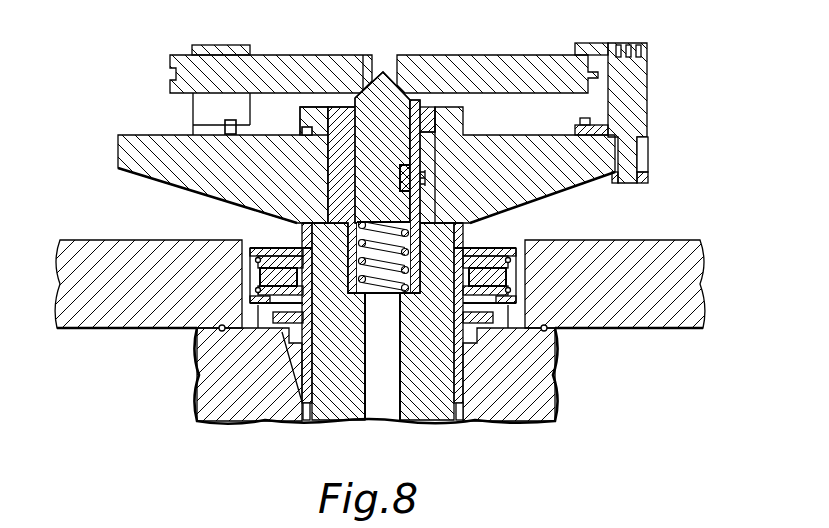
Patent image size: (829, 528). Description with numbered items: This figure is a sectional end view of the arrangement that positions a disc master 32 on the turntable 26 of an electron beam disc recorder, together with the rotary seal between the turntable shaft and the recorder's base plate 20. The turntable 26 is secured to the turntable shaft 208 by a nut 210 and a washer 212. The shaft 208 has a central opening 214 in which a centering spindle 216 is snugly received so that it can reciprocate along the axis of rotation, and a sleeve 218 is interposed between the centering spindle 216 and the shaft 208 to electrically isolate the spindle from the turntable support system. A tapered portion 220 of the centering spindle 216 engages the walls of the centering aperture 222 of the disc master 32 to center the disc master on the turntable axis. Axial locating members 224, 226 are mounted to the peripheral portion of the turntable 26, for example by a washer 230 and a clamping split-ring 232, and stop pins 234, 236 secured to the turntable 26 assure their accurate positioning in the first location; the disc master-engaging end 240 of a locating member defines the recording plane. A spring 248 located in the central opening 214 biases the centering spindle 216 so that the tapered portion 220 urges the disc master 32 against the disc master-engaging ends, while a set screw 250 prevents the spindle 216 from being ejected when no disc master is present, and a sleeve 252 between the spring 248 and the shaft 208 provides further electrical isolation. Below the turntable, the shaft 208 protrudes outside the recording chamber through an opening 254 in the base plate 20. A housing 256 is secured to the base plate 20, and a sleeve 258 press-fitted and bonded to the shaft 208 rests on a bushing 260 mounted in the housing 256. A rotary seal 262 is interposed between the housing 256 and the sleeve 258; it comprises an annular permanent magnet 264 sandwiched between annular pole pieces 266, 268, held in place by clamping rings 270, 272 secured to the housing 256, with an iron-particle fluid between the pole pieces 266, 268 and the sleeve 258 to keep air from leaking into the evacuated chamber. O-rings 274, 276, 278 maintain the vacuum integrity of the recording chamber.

The base plate 20 is at (650, 330).
The turntable 26 is at (557, 190).
The disc master 32 is at (473, 54).
The turntable shaft 208 is at (257, 211).
The nut 210 is at (303, 106).
The washer 212 is at (308, 136).
The central opening 214 is at (340, 174).
The centering spindle 216 is at (400, 208).
The sleeve 218 is at (351, 138).
The tapered portion 220 is at (380, 66).
The centering aperture 222 is at (393, 58).
The axial locating member 224 is at (648, 83).
The axial locating member 226 is at (245, 97).
The washer 230 is at (648, 168).
The clamping split-ring 232 is at (646, 183).
The stop pin 234 is at (582, 122).
The stop pin 236 is at (225, 123).
The disc master-engaging end 240 is at (565, 64).
The spring 248 is at (383, 292).
The set screw 250 is at (437, 167).
The sleeve 252 is at (402, 418).
The opening 254 is at (257, 279).
The housing 256 is at (562, 392).
The sleeve 258 is at (275, 422).
The bushing 260 is at (493, 420).
The rotary seal 262 is at (275, 318).
The annular permanent magnet 264 is at (516, 268).
The annular pole piece 266 is at (282, 248).
The annular pole piece 268 is at (497, 296).
The clamping ring 270 is at (517, 251).
The clamping ring 272 is at (520, 308).
The O-ring 274 is at (257, 262).
The O-ring 276 is at (250, 298).
The O-ring 278 is at (219, 331).